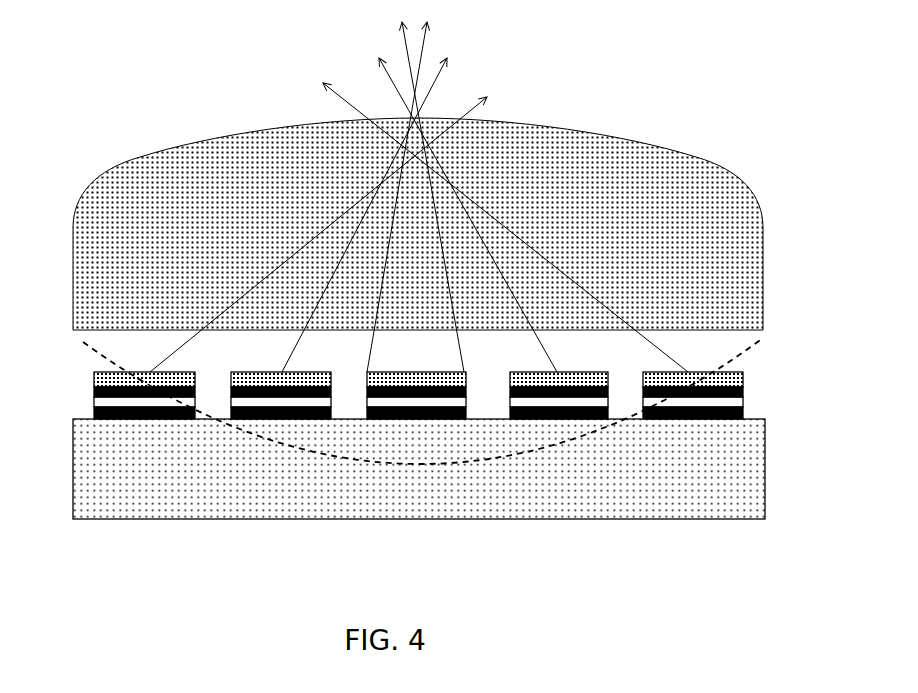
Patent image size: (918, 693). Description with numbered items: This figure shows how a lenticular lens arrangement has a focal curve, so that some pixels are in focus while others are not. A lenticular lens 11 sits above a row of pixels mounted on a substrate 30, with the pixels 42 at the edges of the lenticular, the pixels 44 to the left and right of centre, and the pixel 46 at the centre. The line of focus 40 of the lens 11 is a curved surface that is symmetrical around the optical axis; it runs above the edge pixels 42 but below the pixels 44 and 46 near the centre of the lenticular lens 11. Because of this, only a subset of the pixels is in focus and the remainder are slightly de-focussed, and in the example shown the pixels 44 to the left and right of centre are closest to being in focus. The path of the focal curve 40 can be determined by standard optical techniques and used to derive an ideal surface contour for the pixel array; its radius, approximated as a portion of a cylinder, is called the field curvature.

The lenticular lens 11 is at (598, 147).
The substrate 30 is at (712, 478).
The focal curve 40 is at (735, 352).
The edge pixels 42 is at (120, 430).
The pixels left and right of centre 44 is at (280, 425).
The centre pixel 46 is at (400, 427).